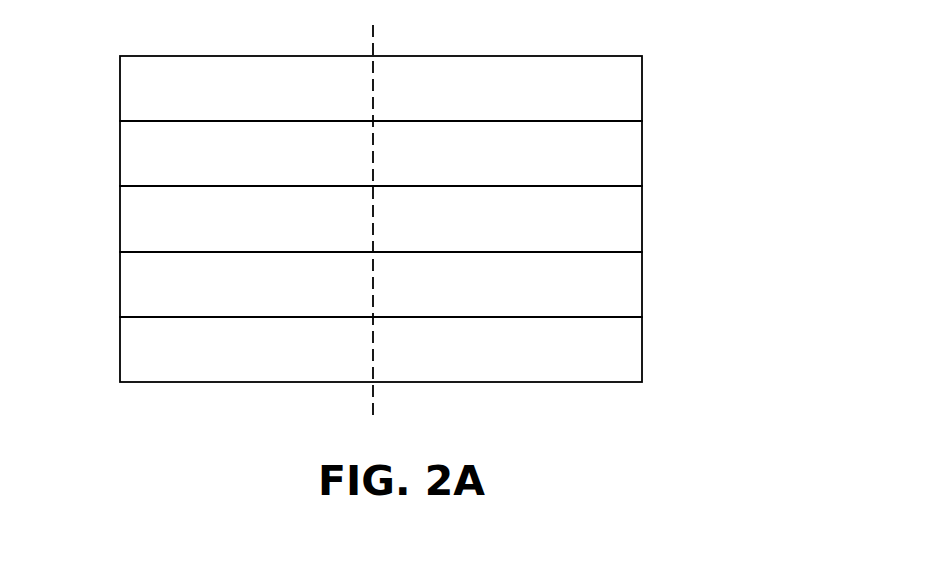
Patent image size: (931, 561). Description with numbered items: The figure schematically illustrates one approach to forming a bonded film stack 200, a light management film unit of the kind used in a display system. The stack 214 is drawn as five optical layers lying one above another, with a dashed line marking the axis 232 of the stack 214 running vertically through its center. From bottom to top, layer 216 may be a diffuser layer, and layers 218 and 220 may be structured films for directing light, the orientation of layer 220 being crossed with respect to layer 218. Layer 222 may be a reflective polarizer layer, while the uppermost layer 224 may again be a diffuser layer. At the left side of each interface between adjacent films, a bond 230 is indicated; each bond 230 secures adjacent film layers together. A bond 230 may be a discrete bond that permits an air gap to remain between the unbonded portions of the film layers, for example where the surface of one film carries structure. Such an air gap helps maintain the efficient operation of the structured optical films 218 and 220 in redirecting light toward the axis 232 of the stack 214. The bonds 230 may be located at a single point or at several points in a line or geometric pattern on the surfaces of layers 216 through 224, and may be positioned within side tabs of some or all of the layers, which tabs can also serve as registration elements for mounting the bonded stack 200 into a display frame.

The bonded film stack 200 is at (165, 414).
The stack 214 is at (478, 220).
The diffuser layer 216 is at (642, 351).
The structured film 218 is at (642, 292).
The structured film 220 is at (642, 222).
The reflective polarizer layer 222 is at (642, 160).
The diffuser layer 224 is at (421, 88).
The bond 230 is at (142, 121).
The axis 232 is at (375, 404).